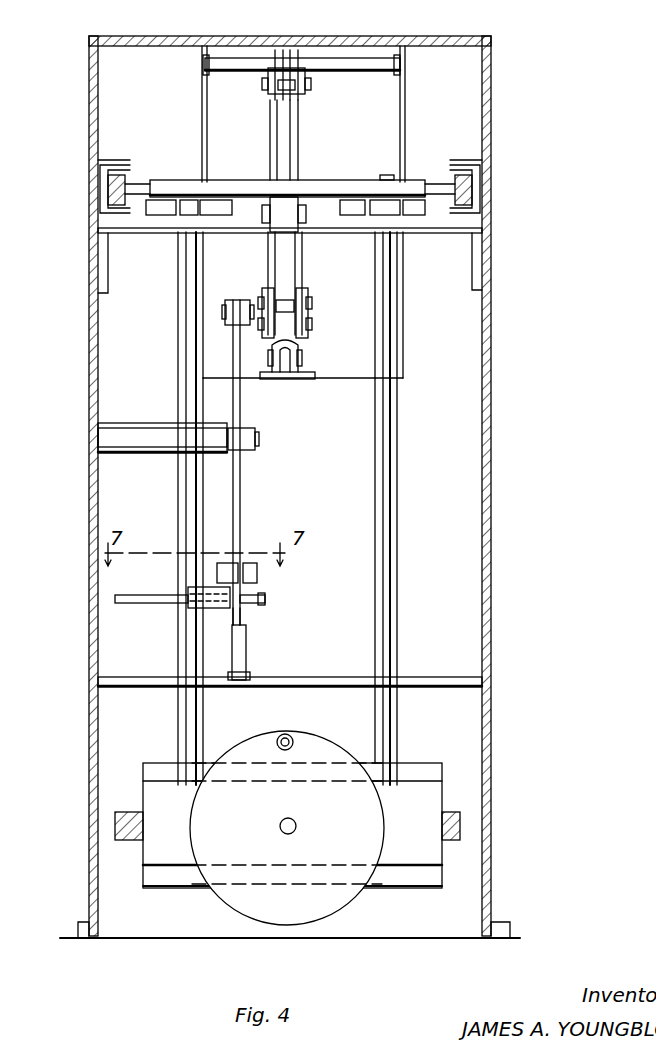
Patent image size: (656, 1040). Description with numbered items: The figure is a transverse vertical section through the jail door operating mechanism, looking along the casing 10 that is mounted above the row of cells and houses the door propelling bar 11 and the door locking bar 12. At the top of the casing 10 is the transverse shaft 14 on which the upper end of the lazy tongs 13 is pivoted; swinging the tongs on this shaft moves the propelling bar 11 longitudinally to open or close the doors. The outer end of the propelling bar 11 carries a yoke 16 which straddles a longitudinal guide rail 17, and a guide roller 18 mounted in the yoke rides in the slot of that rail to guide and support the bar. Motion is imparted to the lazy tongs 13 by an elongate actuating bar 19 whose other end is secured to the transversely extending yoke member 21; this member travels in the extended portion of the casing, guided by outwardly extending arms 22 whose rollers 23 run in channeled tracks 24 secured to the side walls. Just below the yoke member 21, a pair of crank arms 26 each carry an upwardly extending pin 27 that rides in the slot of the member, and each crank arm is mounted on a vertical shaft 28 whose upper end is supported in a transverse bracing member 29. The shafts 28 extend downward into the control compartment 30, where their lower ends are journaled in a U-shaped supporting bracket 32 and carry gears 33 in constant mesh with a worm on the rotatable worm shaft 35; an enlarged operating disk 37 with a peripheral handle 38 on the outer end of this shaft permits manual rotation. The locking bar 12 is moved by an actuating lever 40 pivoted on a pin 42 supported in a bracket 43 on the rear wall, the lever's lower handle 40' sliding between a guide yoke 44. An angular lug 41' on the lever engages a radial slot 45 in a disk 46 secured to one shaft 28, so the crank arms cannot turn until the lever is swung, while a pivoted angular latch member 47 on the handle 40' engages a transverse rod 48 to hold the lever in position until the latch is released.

The casing 10 is at (418, 40).
The door propelling bar 11 is at (305, 310).
The door locking bar 12 is at (222, 305).
The lazy tongs 13 is at (305, 68).
The transverse shaft 14 is at (235, 58).
The yoke 16 is at (272, 374).
The guide rail 17 is at (300, 378).
The guide roller 18 is at (305, 358).
The actuating bar 19 is at (285, 220).
The yoke member 21 is at (245, 181).
The arms 22 is at (147, 182).
The rollers 23 is at (108, 185).
The channeled tracks 24 is at (105, 213).
The crank arms 26 is at (168, 210).
The pin 27 is at (385, 180).
The vertical shaft 28 is at (190, 345).
The transverse bracing member 29 is at (482, 230).
The control compartment 30 is at (458, 518).
The U-shaped supporting bracket 32 is at (160, 790).
The gear 33 is at (120, 820).
The worm shaft 35 is at (300, 828).
The operating disk 37 is at (332, 765).
The handle 38 is at (280, 738).
The actuating lever 40 is at (268, 462).
The handle 40' is at (268, 611).
The angular lug 41' is at (157, 618).
The pin 42 is at (257, 440).
The bracket 43 is at (150, 453).
The guide yoke 44 is at (262, 575).
The radial slot 45 is at (190, 595).
The disk 46 is at (265, 598).
The angular latch member 47 is at (247, 650).
The transverse rod 48 is at (465, 680).